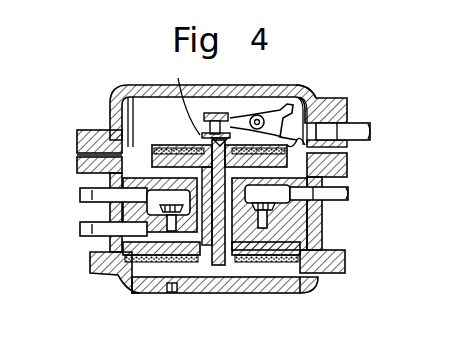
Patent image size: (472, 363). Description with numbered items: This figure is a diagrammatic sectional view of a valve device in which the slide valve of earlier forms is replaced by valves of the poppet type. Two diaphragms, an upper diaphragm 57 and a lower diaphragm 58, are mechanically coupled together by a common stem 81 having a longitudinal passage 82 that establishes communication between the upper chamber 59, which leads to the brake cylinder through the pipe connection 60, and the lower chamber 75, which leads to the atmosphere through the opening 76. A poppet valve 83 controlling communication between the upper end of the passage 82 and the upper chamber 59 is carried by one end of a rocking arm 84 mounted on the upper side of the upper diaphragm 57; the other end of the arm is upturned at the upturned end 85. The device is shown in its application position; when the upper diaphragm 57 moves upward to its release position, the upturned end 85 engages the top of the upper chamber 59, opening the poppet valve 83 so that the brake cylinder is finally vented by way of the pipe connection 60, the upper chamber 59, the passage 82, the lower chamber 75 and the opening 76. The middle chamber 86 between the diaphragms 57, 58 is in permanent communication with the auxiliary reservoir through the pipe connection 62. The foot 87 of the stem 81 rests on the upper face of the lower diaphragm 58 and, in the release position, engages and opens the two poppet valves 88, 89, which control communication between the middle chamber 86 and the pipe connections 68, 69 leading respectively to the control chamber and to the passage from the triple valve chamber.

The upper diaphragm 57 is at (123, 118).
The lower diaphragm 58 is at (132, 290).
The upper chamber 59 is at (143, 108).
The pipe connection 60 is at (357, 130).
The pipe connection 62 is at (93, 225).
The pipe connection 68 is at (85, 193).
The pipe connection 69 is at (330, 192).
The lower chamber 75 is at (207, 273).
The opening 76 is at (172, 293).
The common stem 81 is at (228, 226).
The longitudinal passage 82 is at (218, 225).
The poppet valve 83 is at (185, 95).
The rocking arm 84 is at (236, 120).
The upturned end 85 is at (313, 93).
The middle chamber 86 is at (80, 163).
The foot 87 is at (125, 273).
The poppet valve 88 is at (170, 207).
The poppet valve 89 is at (270, 198).